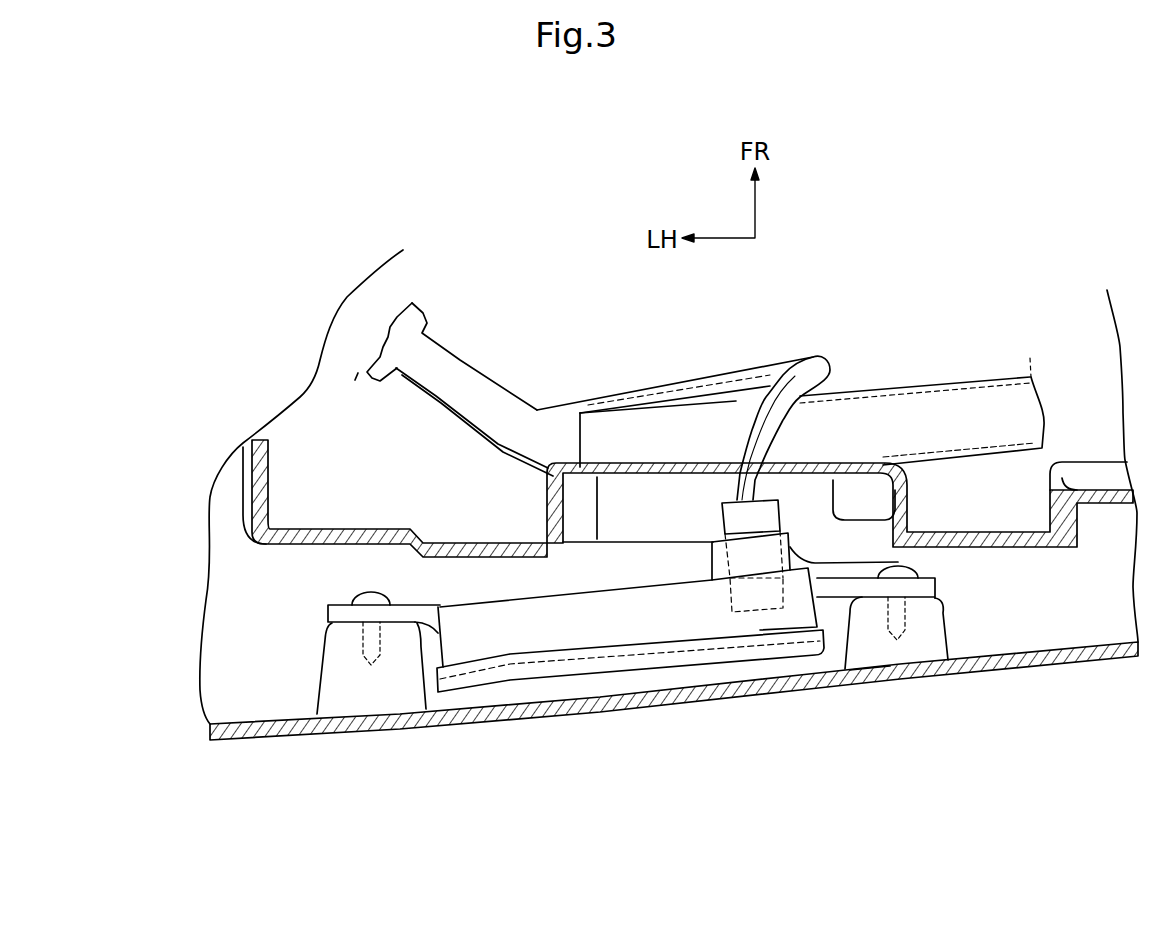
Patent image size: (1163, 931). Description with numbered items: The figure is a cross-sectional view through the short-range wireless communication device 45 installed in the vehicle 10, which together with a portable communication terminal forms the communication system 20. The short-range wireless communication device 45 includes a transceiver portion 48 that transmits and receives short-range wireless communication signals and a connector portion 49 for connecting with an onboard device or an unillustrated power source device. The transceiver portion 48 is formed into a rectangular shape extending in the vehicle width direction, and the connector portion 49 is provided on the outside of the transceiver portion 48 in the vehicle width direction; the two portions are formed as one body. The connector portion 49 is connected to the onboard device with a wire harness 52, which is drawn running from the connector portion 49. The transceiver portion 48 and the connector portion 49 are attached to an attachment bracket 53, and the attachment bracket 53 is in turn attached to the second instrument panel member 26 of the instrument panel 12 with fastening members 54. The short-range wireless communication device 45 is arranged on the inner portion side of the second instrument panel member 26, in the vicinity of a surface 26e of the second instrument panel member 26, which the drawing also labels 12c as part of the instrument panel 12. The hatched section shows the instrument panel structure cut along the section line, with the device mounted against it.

The vehicle 10 is at (287, 206).
The instrument panel 12 is at (674, 720).
The floor panel upper surface portion 12c is at (850, 732).
The communication system 20 is at (510, 574).
The second instrument panel member 26 is at (1008, 677).
The surface 26e is at (850, 732).
The short-range wireless communication device 45 is at (630, 678).
The transceiver portion 48 is at (492, 710).
The connector portion 49 is at (764, 657).
The wire harness 52 is at (657, 398).
The attachment bracket 53 is at (337, 602).
The fastening members 54 is at (372, 592).